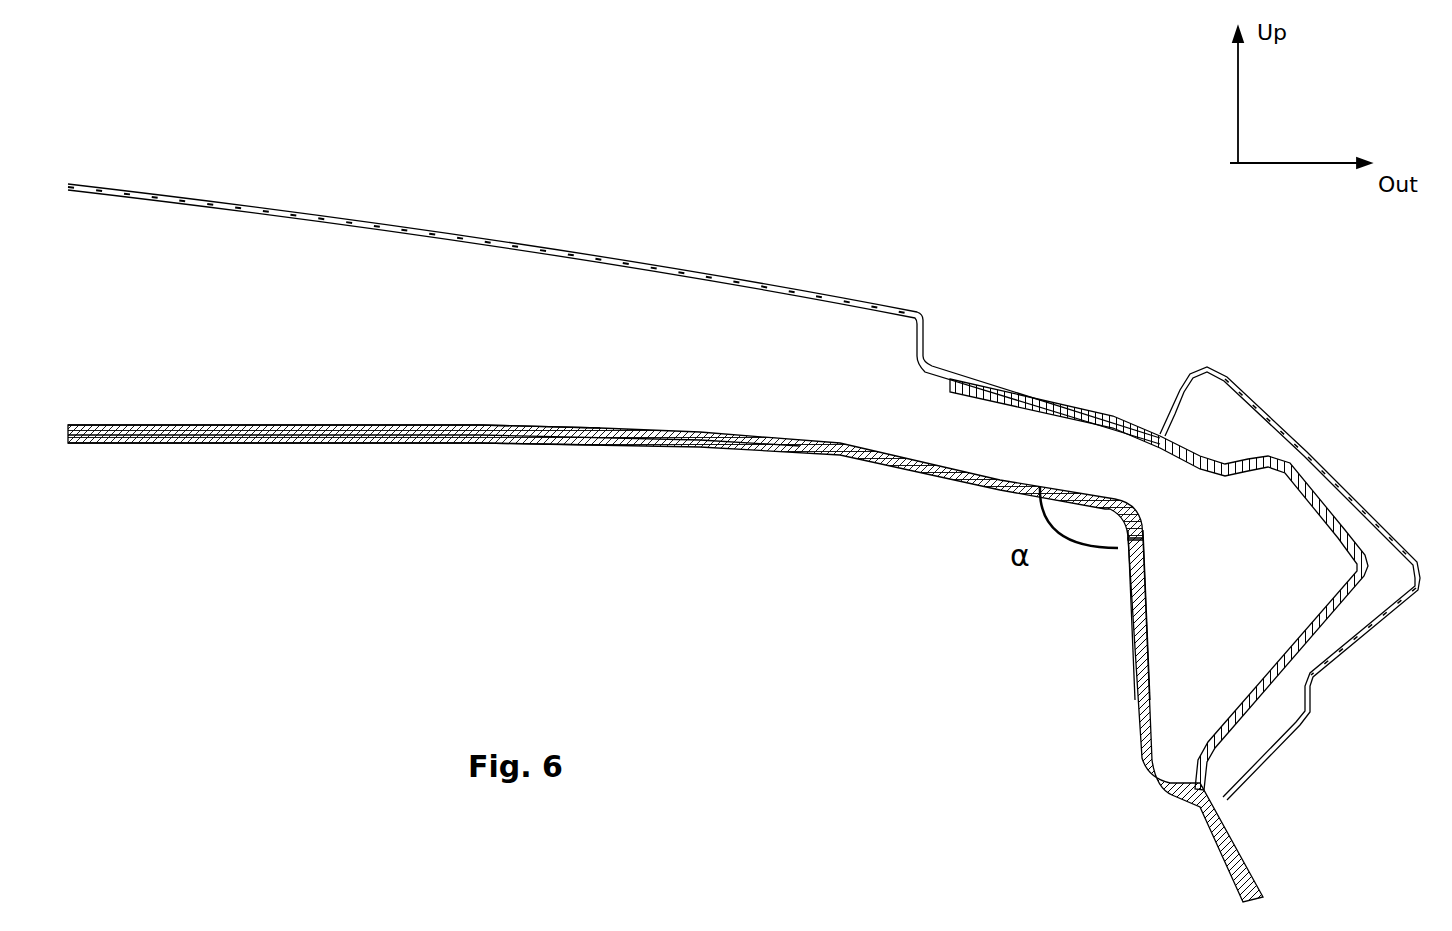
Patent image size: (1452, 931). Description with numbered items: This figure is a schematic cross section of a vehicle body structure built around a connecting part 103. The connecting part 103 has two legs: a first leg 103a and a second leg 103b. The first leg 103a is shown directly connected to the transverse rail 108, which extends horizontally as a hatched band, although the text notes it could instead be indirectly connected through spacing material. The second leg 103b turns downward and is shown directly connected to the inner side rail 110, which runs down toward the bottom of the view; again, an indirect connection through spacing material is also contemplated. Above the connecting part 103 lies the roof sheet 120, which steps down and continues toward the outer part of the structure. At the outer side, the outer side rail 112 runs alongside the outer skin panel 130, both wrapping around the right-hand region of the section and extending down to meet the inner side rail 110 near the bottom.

The roof sheet 120 is at (550, 247).
The outer side rail 112 is at (1207, 450).
The outer skin panel 130 is at (1308, 448).
The connecting part 103 is at (933, 470).
The transverse rail 108 is at (330, 427).
The first leg 103a is at (368, 438).
The second leg 103b is at (1135, 577).
The inner side rail 110 is at (1140, 698).